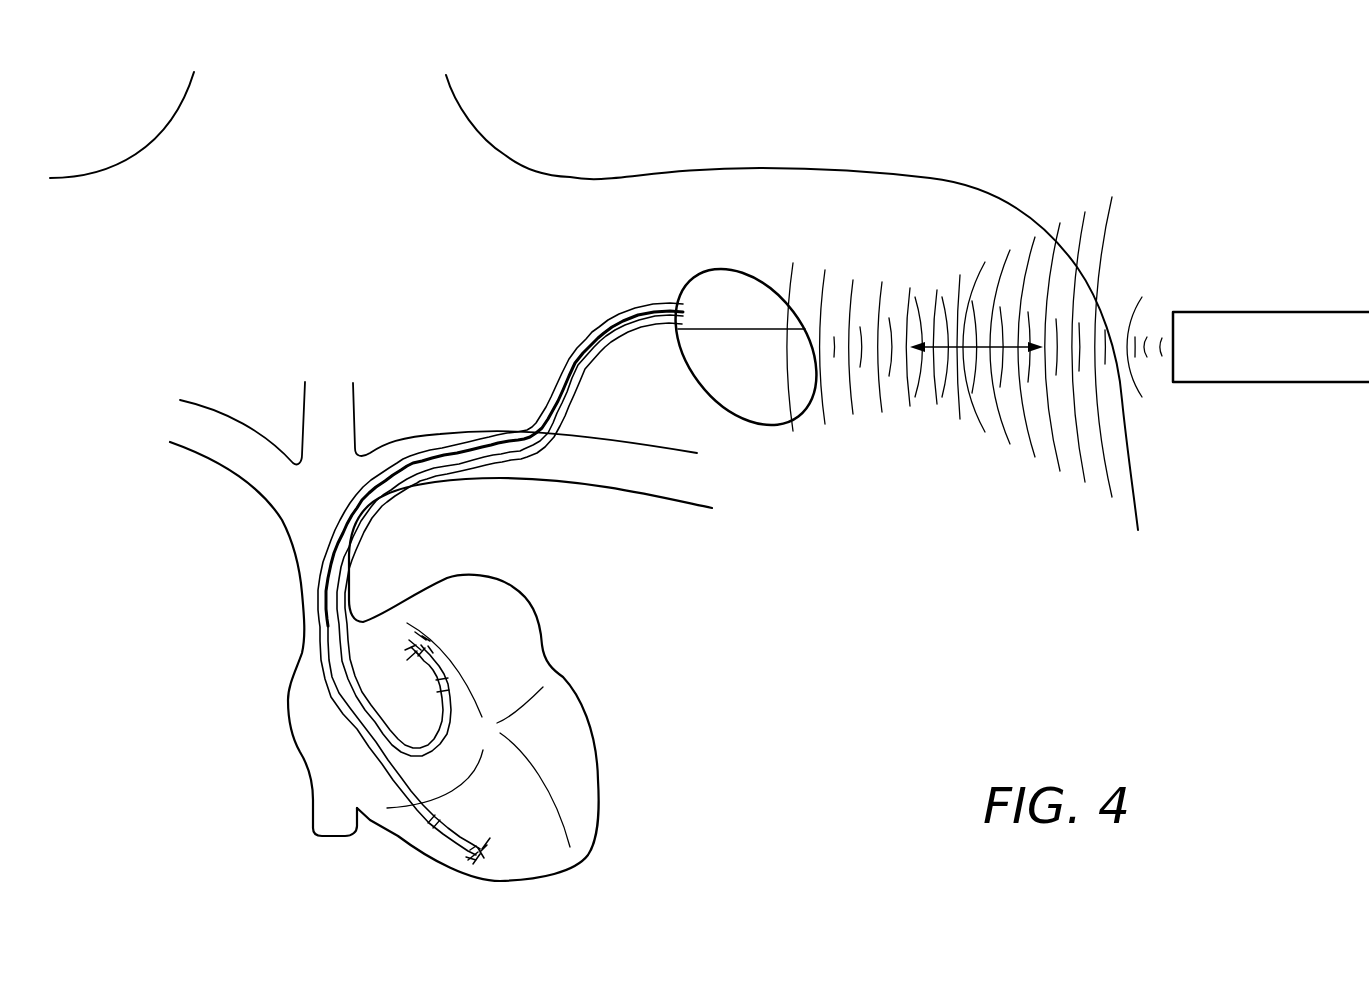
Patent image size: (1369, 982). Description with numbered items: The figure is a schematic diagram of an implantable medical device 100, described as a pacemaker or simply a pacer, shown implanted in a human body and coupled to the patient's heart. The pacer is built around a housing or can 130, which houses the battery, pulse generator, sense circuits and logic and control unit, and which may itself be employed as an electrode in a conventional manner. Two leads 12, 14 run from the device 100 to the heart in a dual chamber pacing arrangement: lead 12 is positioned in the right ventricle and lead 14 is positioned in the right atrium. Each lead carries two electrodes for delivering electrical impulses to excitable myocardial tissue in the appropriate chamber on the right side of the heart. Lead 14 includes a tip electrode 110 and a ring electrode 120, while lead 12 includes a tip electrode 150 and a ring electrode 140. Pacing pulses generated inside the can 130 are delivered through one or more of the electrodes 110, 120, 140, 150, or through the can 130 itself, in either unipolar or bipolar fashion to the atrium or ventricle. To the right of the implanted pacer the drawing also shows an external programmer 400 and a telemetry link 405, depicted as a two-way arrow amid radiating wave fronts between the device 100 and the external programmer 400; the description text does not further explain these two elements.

The lead 12 is at (312, 546).
The lead 14 is at (366, 540).
The implantable medical device 100 is at (746, 350).
The tip electrode 110 is at (420, 632).
The ring electrode 120 is at (446, 683).
The housing or can 130 is at (763, 428).
The ring electrode 140 is at (437, 818).
The tip electrode 150 is at (484, 847).
The external programmer 400 is at (1277, 311).
The telemetry communication link 405 is at (927, 254).